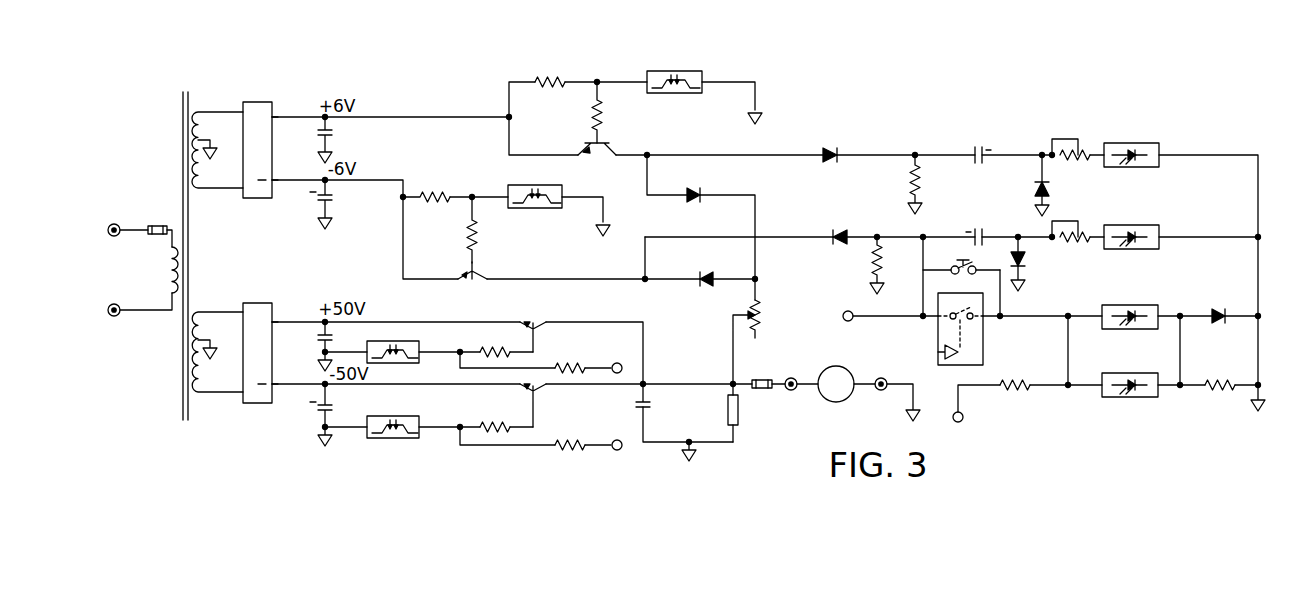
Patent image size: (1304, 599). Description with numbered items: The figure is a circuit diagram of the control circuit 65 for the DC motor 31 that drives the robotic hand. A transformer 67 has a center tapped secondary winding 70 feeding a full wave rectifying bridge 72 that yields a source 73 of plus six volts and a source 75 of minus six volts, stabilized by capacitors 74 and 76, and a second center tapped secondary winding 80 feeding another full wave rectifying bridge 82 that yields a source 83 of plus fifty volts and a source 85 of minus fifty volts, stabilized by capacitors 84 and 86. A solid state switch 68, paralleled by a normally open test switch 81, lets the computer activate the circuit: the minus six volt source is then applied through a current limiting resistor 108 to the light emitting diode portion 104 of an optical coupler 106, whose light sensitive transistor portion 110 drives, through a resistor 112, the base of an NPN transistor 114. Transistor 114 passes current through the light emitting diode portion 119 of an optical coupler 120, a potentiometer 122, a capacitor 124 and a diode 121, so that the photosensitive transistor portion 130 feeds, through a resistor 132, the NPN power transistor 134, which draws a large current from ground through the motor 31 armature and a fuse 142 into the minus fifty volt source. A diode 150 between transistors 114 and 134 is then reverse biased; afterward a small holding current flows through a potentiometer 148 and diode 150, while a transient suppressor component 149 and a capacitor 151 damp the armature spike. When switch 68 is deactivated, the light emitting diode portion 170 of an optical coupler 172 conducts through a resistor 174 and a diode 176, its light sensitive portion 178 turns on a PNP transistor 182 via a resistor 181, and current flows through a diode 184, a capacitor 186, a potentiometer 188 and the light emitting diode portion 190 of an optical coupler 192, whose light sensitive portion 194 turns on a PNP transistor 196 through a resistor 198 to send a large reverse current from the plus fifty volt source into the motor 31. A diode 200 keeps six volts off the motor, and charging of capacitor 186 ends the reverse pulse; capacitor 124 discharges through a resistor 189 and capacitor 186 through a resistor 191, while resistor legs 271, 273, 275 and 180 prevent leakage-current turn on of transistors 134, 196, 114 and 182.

The motor 31 is at (849, 396).
The control circuit 65 is at (873, 103).
The transformer 67 is at (198, 258).
The solid state switch 68 is at (984, 340).
The center tapped secondary winding 70 is at (204, 138).
The full wave rectifying bridge 72 is at (263, 194).
The source of +6 volts DC 73 is at (274, 116).
The capacitor 74 is at (335, 134).
The source of -6 volts DC 75 is at (273, 180).
The capacitor 76 is at (335, 213).
The center tapped secondary winding 80 is at (204, 374).
The manually operated switch 81 is at (968, 269).
The full wave rectifying bridge 82 is at (263, 345).
The source of +50 volts DC 83 is at (274, 321).
The capacitor 84 is at (334, 341).
The source of -50 volts DC 85 is at (274, 391).
The capacitor 86 is at (335, 422).
The light emitting diode portion 104 is at (1111, 397).
The optical coupler 106 is at (546, 212).
The current limiting resistor 108 is at (1222, 388).
The light sensitive transistor portion 110 is at (532, 186).
The resistor 112 is at (468, 230).
The NPN transistor 114 is at (485, 270).
The light emitting diode portion 119 is at (1142, 226).
The optical coupler 120 is at (373, 443).
The diode 121 is at (843, 236).
The potentiometer 122 is at (1069, 240).
The capacitor 124 is at (978, 231).
The photosensitive transistor portion 130 is at (404, 441).
The resistor 132 is at (500, 424).
The NPN power transistor 134 is at (541, 396).
The fuse 142 is at (766, 380).
The potentiometer 148 is at (761, 323).
The transient suppressor component 149 is at (740, 414).
The diode 150 is at (708, 273).
The capacitor 151 is at (651, 408).
The light emitting diode portion 170 is at (1107, 307).
The optical coupler 172 is at (705, 70).
The resistor 174 is at (1011, 388).
The diode 176 is at (1218, 311).
The light sensitive portion 178 is at (667, 71).
The resistor 180 is at (556, 79).
The resistor 181 is at (604, 114).
The PNP transistor 182 is at (594, 151).
The diode 184 is at (831, 150).
The capacitor 186 is at (982, 149).
The resistor 188 is at (1083, 150).
The resistor 189 is at (881, 258).
The light emitting diode portion 190 is at (1142, 143).
The resistor 191 is at (913, 177).
The optical coupler 192 is at (428, 338).
The light sensitive portion 194 is at (393, 341).
The PNP transistor 196 is at (536, 326).
The resistor 198 is at (497, 350).
The diode 200 is at (698, 193).
The resistor 271 is at (560, 450).
The resistor 273 is at (566, 365).
The resistor 275 is at (440, 192).